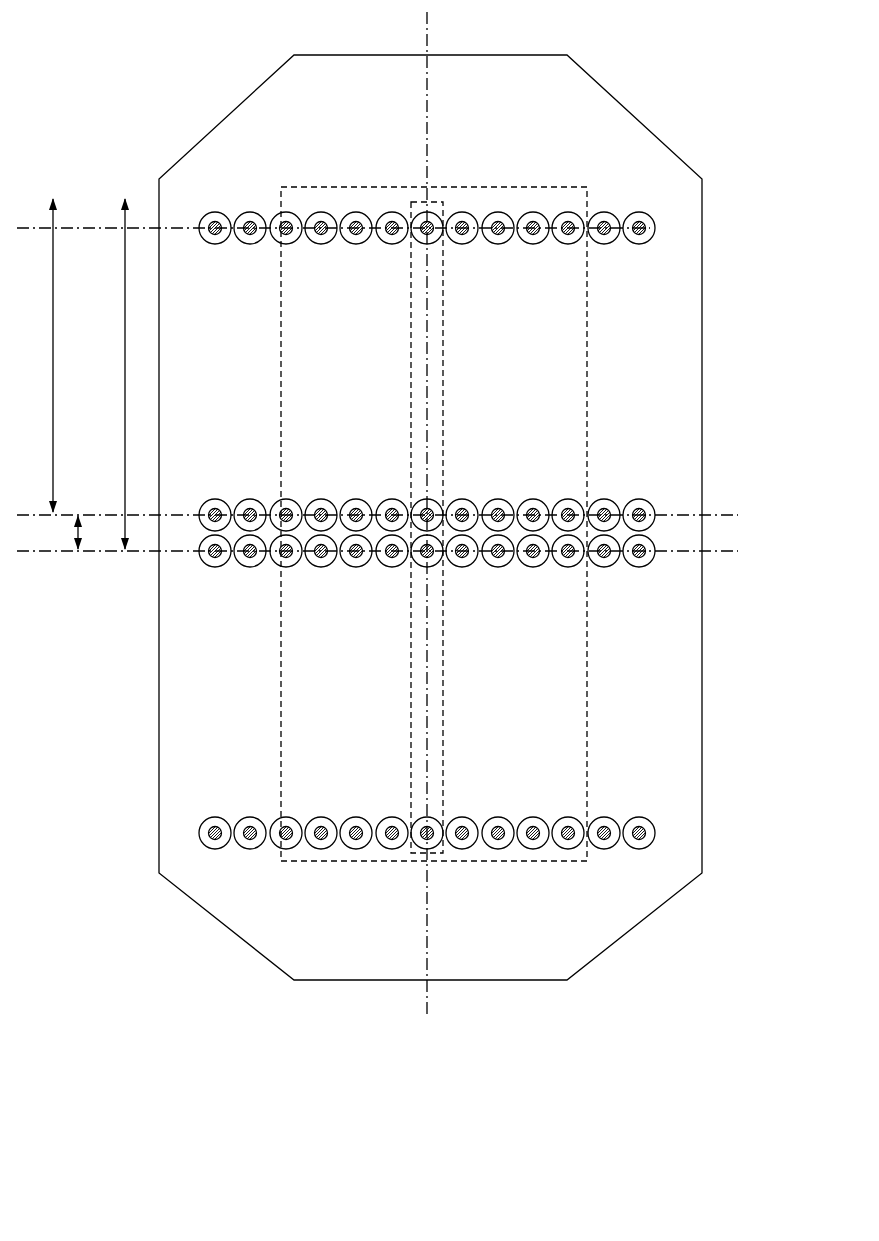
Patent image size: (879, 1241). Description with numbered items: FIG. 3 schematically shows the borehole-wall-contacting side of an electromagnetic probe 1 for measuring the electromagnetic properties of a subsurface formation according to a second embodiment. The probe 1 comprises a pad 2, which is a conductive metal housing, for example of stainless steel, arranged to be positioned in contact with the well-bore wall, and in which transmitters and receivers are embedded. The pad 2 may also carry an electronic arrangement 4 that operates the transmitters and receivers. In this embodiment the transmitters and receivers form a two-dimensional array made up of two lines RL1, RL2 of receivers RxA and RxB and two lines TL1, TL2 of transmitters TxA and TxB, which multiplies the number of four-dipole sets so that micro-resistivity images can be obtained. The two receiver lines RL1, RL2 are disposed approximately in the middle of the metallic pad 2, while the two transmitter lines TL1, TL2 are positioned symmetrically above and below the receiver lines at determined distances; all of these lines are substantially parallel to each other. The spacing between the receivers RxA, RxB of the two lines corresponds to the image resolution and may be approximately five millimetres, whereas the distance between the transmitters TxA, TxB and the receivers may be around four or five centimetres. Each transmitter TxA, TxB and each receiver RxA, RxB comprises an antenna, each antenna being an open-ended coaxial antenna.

The electromagnetic probe 1 is at (136, 90).
The pad 2 is at (157, 878).
The electronic arrangement 4 is at (265, 713).
The first line of transmitters TL1 is at (413, 255).
The second line of transmitters TL2 is at (502, 857).
The first line of receivers RL1 is at (403, 491).
The second line of receivers RL2 is at (411, 574).
The transmitter TxA is at (429, 234).
The transmitter TxB is at (429, 839).
The receiver RxA is at (434, 505).
The receiver RxB is at (434, 562).